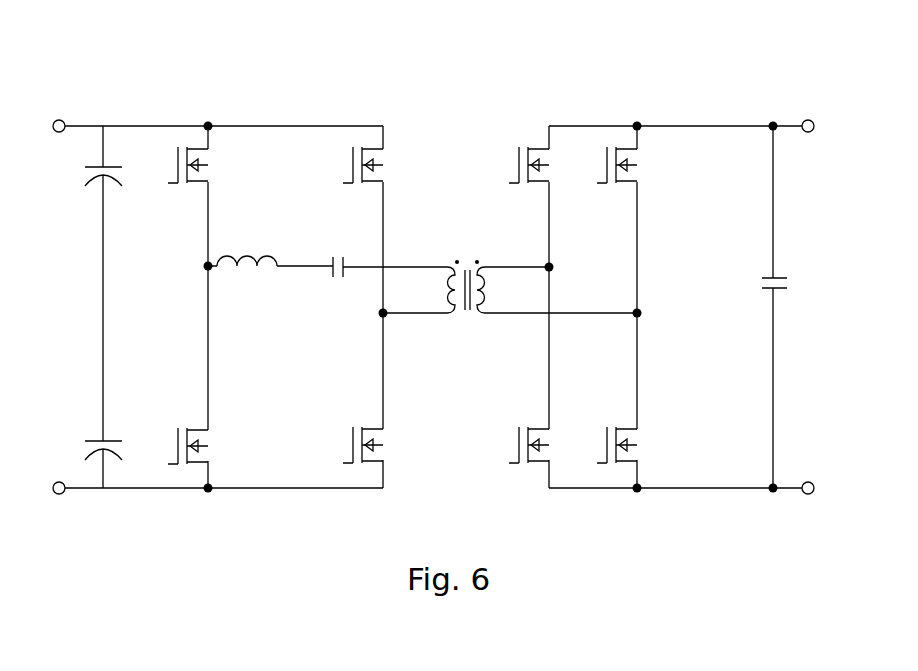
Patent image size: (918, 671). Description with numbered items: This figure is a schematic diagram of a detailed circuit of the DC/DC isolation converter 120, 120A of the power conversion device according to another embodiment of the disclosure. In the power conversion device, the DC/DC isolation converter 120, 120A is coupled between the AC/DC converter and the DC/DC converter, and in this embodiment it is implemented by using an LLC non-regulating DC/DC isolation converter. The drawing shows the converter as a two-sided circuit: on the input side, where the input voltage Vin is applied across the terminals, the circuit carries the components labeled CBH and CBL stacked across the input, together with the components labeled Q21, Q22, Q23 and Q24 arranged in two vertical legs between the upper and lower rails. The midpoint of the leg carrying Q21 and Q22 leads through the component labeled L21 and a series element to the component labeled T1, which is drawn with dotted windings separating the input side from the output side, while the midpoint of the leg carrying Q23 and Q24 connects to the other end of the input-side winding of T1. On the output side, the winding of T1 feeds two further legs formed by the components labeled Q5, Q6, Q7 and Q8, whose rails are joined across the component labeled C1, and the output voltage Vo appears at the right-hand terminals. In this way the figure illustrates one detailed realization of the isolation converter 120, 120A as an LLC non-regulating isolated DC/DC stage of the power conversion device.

The DC/DC isolation converter 120 is at (440, 251).
The DC/DC isolation converter 120A is at (156, 35).
The primary-side switch Q21 is at (210, 213).
The primary-side switch Q22 is at (210, 394).
The primary-side switch Q23 is at (385, 213).
The primary-side switch Q24 is at (385, 394).
The secondary-side switch Q5 is at (546, 213).
The secondary-side switch Q6 is at (546, 394).
The secondary-side switch Q7 is at (634, 213).
The secondary-side switch Q8 is at (634, 394).
The upper bus capacitor CBH is at (121, 213).
The lower bus capacitor CBL is at (120, 394).
The resonant inductor L21 is at (270, 281).
The transformer T1 is at (510, 267).
The output capacitor C1 is at (760, 307).
The input voltage Vin is at (66, 304).
The output voltage Vo is at (824, 302).